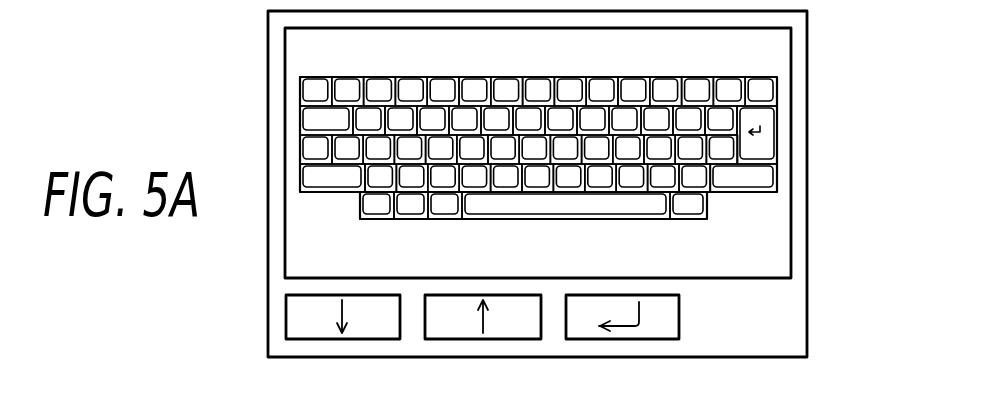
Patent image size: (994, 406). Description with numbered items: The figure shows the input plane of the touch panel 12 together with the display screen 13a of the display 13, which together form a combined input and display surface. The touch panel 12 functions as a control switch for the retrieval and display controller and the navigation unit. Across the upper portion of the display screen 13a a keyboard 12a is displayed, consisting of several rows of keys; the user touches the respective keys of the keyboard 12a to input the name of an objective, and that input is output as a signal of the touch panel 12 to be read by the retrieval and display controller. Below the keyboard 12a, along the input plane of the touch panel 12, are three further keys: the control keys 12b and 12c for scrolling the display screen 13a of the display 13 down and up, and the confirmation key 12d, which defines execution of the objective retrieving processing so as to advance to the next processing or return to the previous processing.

The touch panel 12 is at (586, 184).
The display 13 is at (807, 52).
The display screen 13a is at (791, 128).
The keyboard 12a is at (300, 88).
The control key 12b is at (382, 336).
The control key 12c is at (522, 336).
The confirmation key 12d is at (657, 336).